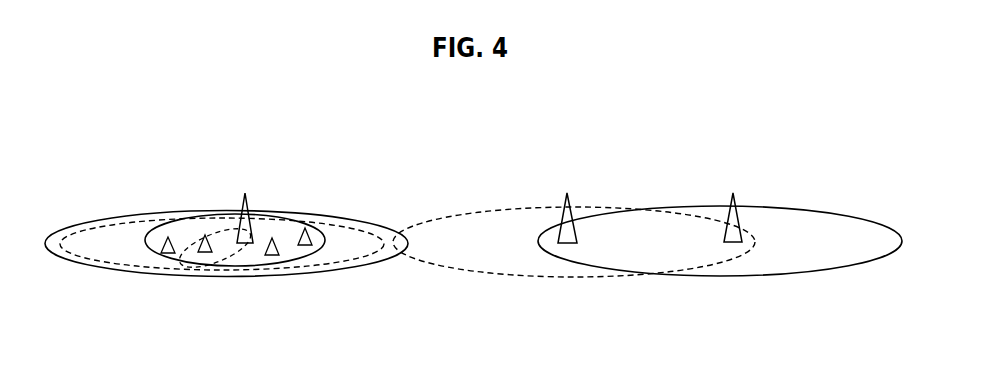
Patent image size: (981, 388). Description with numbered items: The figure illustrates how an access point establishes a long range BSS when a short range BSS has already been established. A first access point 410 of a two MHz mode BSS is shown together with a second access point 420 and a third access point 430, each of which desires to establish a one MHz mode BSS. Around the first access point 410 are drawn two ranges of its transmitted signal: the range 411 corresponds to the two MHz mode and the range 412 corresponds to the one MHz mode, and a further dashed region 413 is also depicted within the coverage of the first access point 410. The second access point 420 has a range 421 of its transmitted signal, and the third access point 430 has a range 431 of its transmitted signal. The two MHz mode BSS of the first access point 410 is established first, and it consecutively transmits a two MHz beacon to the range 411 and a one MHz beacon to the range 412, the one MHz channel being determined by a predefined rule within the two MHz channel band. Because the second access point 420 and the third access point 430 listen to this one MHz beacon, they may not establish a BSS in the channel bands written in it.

The AP1 410 is at (243, 164).
The range 411 is at (205, 215).
The range 412 is at (272, 277).
The beam of AP1 413 is at (230, 263).
The AP2 420 is at (567, 165).
The range 421 is at (535, 278).
The AP3 430 is at (732, 163).
The range 431 is at (740, 278).